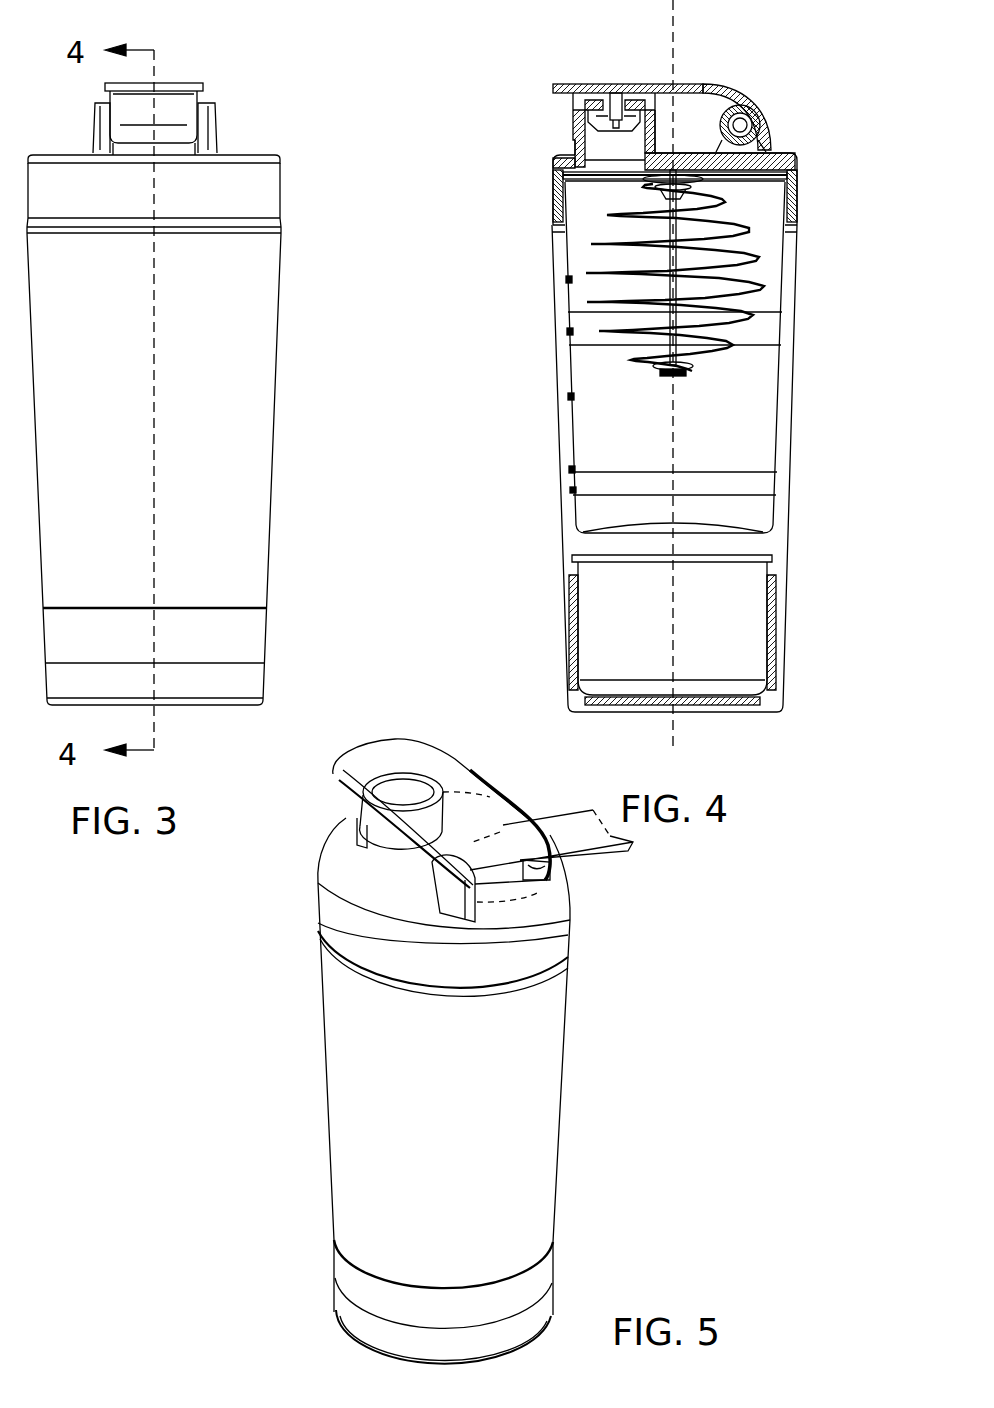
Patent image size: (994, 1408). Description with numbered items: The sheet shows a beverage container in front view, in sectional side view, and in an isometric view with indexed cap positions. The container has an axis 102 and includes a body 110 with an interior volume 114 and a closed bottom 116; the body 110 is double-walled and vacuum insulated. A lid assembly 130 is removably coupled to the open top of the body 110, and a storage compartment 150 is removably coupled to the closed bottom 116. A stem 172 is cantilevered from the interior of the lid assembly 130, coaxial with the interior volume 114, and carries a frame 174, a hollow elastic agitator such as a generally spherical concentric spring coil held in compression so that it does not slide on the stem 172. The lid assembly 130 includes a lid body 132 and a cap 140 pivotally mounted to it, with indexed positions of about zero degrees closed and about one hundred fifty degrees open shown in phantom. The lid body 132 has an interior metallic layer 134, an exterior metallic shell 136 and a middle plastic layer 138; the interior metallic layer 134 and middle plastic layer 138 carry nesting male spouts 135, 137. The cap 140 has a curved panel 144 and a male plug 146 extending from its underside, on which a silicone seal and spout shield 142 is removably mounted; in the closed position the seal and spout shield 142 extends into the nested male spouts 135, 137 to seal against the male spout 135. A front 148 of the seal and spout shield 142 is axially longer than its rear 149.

In FIG. 4, the axis 102 is at (682, 58).
In FIG. 3, the body 110 is at (274, 444).
In FIG. 4, the body 110 is at (793, 382).
In FIG. 5, the body 110 is at (322, 1102).
In FIG. 4, the interior volume 114 is at (675, 357).
In FIG. 4, the closed bottom 116 is at (750, 543).
In FIG. 3, the lid assembly 130 is at (323, 77).
In FIG. 4, the lid assembly 130 is at (528, 214).
In FIG. 5, the lid assembly 130 is at (318, 890).
In FIG. 4, the lid body 132 is at (798, 190).
In FIG. 4, the interior metallic layer 134 is at (757, 175).
In FIG. 4, the male spout 135 is at (650, 140).
In FIG. 4, the exterior metallic shell 136 is at (785, 148).
In FIG. 4, the male spout 137 is at (565, 160).
In FIG. 4, the middle plastic layer 138 is at (797, 164).
In FIG. 3, the cap 140 is at (196, 87).
In FIG. 4, the cap 140 is at (553, 84).
In FIG. 3, the seal and spout shield 142 is at (100, 103).
In FIG. 4, the seal and spout shield 142 is at (573, 115).
In FIG. 4, the panel 144 is at (728, 102).
In FIG. 4, the male plug 146 is at (617, 92).
In FIG. 3, the front 148 is at (185, 115).
In FIG. 4, the front 148 is at (575, 128).
In FIG. 4, the rear 149 is at (760, 126).
In FIG. 3, the storage compartment 150 is at (266, 632).
In FIG. 4, the storage compartment 150 is at (785, 604).
In FIG. 5, the storage compartment 150 is at (330, 1255).
In FIG. 4, the stem 172 is at (752, 240).
In FIG. 4, the frame 174 is at (755, 288).